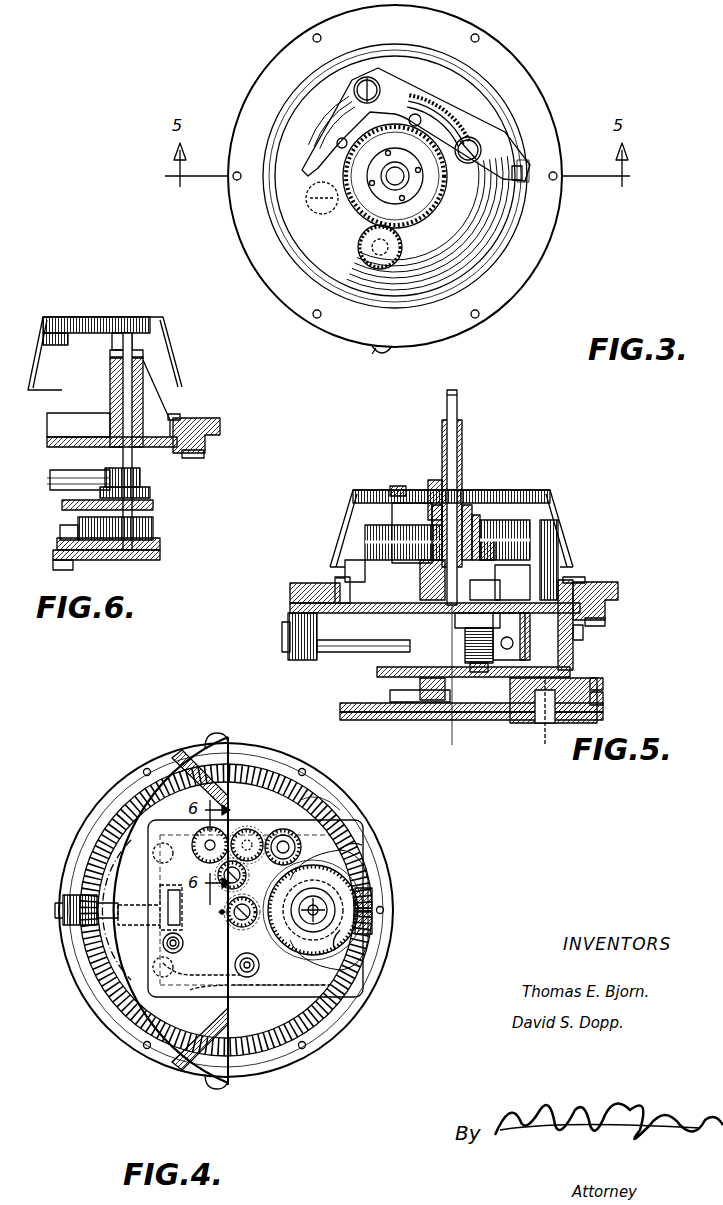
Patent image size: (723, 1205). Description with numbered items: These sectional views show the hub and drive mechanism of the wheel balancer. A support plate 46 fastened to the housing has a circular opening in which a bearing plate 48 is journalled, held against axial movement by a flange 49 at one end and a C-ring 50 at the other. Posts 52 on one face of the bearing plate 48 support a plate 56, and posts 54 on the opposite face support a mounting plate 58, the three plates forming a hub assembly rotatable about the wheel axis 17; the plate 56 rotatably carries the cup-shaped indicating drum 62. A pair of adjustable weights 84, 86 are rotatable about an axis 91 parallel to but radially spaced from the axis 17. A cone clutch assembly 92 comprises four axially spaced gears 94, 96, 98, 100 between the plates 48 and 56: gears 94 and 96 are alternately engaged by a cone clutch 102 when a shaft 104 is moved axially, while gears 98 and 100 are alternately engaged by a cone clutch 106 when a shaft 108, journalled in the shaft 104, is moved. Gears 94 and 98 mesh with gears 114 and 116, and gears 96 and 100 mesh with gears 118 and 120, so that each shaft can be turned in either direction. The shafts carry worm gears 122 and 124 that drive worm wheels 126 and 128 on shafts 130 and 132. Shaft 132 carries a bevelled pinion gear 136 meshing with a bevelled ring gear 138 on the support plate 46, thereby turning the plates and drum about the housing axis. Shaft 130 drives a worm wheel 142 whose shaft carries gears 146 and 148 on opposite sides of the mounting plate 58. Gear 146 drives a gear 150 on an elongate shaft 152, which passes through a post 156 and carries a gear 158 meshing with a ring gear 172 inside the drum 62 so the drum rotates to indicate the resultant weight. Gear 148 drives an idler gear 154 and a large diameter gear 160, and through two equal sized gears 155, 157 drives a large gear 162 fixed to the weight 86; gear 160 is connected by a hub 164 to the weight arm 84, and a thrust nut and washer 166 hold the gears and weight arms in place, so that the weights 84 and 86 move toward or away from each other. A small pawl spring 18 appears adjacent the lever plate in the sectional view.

In FIG. 5, the axis 17 is at (450, 740).
In FIG. 4, the axis 17 is at (220, 914).
In FIG. 3, the pawl spring 18 is at (320, 134).
In FIG. 3, the support plate 46 is at (501, 50).
In FIG. 5, the support plate 46 is at (620, 586).
In FIG. 6, the support plate 46 is at (212, 416).
In FIG. 4, the support plate 46 is at (390, 870).
In FIG. 3, the bearing plate 48 is at (478, 88).
In FIG. 5, the bearing plate 48 is at (574, 640).
In FIG. 6, the bearing plate 48 is at (180, 455).
In FIG. 4, the bearing plate 48 is at (98, 973).
In FIG. 5, the flange 49 is at (580, 634).
In FIG. 3, the C-ring 50 is at (519, 170).
In FIG. 5, the C-ring 50 is at (580, 580).
In FIG. 6, the C-ring 50 is at (178, 418).
In FIG. 3, the posts 52 is at (415, 44).
In FIG. 5, the posts 52 is at (548, 534).
In FIG. 5, the posts 54 is at (580, 670).
In FIG. 4, the posts 54 is at (160, 841).
In FIG. 3, the plate 56 is at (365, 119).
In FIG. 5, the plate 56 is at (547, 489).
In FIG. 6, the plate 56 is at (47, 347).
In FIG. 5, the mounting plate 58 is at (418, 693).
In FIG. 6, the mounting plate 58 is at (62, 506).
In FIG. 4, the mounting plate 58 is at (352, 825).
In FIG. 3, the indicating drum 62 is at (292, 238).
In FIG. 5, the indicating drum 62 is at (565, 504).
In FIG. 6, the indicating drum 62 is at (170, 343).
In FIG. 3, the adjustable weight 84 is at (388, 354).
In FIG. 5, the adjustable weight 84 is at (357, 720).
In FIG. 4, the adjustable weight 84 is at (368, 868).
In FIG. 3, the adjustable weight 86 is at (378, 354).
In FIG. 5, the adjustable weight 86 is at (357, 692).
In FIG. 4, the adjustable weight 86 is at (370, 846).
In FIG. 5, the axis 91 is at (546, 735).
In FIG. 4, the axis 91 is at (313, 925).
In FIG. 5, the cone clutch assembly 92 is at (436, 484).
In FIG. 5, the gear 94 is at (433, 515).
In FIG. 5, the gear 96 is at (476, 522).
In FIG. 5, the gear 98 is at (423, 562).
In FIG. 5, the gear 100 is at (478, 588).
In FIG. 5, the cone clutch 102 is at (466, 520).
In FIG. 3, the shaft 104 is at (395, 176).
In FIG. 5, the shaft 104 is at (463, 430).
In FIG. 5, the cone clutch 106 is at (486, 545).
In FIG. 3, the shaft 108 is at (396, 165).
In FIG. 5, the shaft 108 is at (458, 393).
In FIG. 3, the gear 114 is at (442, 120).
In FIG. 5, the gear 114 is at (505, 540).
In FIG. 5, the gear 116 is at (512, 582).
In FIG. 5, the gear 118 is at (362, 536).
In FIG. 5, the gear 120 is at (350, 576).
In FIG. 5, the worm gear 122 is at (460, 620).
In FIG. 4, the worm gear 122 is at (236, 968).
In FIG. 5, the worm gear 124 is at (464, 641).
In FIG. 4, the worm gear 124 is at (201, 969).
In FIG. 5, the worm wheel 126 is at (528, 648).
In FIG. 4, the worm wheel 126 is at (250, 985).
In FIG. 5, the worm wheel 128 is at (468, 664).
In FIG. 4, the worm wheel 128 is at (198, 876).
In FIG. 5, the shaft 130 is at (515, 636).
In FIG. 6, the shaft 130 is at (65, 490).
In FIG. 4, the shaft 130 is at (248, 930).
In FIG. 5, the shaft 132 is at (348, 652).
In FIG. 4, the shaft 132 is at (150, 919).
In FIG. 5, the bevelled pinion gear 136 is at (300, 661).
In FIG. 4, the bevelled pinion gear 136 is at (66, 926).
In FIG. 5, the bevelled ring gear 138 is at (600, 622).
In FIG. 6, the bevelled ring gear 138 is at (204, 455).
In FIG. 4, the bevelled ring gear 138 is at (322, 806).
In FIG. 6, the worm wheel 142 is at (142, 480).
In FIG. 6, the gear 146 is at (150, 497).
In FIG. 6, the gear 148 is at (153, 524).
In FIG. 4, the gear 148 is at (258, 812).
In FIG. 4, the gear 150 is at (258, 829).
In FIG. 6, the elongate shaft 152 is at (110, 394).
In FIG. 4, the idler gear 154 is at (292, 840).
In FIG. 6, the gear 155 is at (60, 530).
In FIG. 4, the gear 155 is at (249, 866).
In FIG. 6, the post 156 is at (110, 360).
In FIG. 5, the gear 157 is at (448, 703).
In FIG. 4, the gear 157 is at (226, 910).
In FIG. 3, the gear 158 is at (402, 241).
In FIG. 6, the gear 158 is at (140, 318).
In FIG. 5, the large diameter gear 160 is at (600, 683).
In FIG. 6, the large diameter gear 160 is at (160, 546).
In FIG. 4, the large diameter gear 160 is at (375, 897).
In FIG. 5, the large gear 162 is at (603, 698).
In FIG. 6, the large gear 162 is at (158, 560).
In FIG. 4, the large gear 162 is at (375, 918).
In FIG. 5, the hub 164 is at (512, 720).
In FIG. 5, the thrust nut and washer 166 is at (535, 723).
In FIG. 6, the thrust nut and washer 166 is at (73, 568).
In FIG. 4, the thrust nut and washer 166 is at (340, 932).
In FIG. 3, the ring gear 172 is at (434, 206).
In FIG. 5, the ring gear 172 is at (398, 486).
In FIG. 6, the ring gear 172 is at (112, 345).